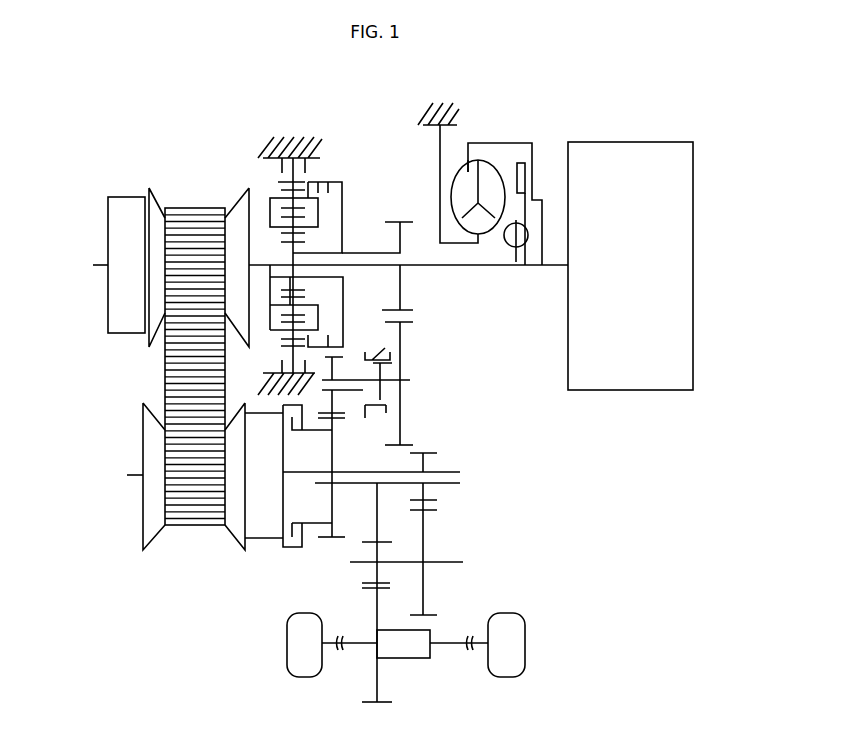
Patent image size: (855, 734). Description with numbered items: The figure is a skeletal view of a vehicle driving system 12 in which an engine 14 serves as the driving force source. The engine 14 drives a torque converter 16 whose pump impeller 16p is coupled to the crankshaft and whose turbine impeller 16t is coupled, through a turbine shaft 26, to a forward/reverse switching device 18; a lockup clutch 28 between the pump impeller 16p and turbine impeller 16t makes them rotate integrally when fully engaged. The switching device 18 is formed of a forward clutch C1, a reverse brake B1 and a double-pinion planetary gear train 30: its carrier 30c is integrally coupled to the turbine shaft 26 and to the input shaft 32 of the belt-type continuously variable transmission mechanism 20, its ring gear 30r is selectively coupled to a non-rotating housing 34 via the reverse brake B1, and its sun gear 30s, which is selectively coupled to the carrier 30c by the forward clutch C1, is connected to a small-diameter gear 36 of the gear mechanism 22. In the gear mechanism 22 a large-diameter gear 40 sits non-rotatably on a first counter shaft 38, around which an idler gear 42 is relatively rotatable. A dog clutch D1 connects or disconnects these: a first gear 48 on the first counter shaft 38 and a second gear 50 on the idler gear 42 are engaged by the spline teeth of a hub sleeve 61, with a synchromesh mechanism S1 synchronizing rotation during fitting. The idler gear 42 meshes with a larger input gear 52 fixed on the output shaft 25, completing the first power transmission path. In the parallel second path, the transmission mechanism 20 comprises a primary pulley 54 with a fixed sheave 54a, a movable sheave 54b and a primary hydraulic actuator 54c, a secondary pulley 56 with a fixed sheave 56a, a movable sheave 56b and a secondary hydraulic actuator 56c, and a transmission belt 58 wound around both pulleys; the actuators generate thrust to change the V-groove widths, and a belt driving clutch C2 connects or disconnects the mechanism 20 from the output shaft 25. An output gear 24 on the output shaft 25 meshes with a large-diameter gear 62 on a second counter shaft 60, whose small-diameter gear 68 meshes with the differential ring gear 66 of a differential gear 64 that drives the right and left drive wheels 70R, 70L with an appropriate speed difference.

The vehicle driving system 12 is at (501, 80).
The engine 14 is at (612, 153).
The torque converter 16 is at (503, 211).
The pump impeller 16p is at (459, 174).
The turbine impeller 16t is at (492, 176).
The forward/reverse switching device 18 is at (341, 157).
The belt-type continuously variable transmission mechanism 20 is at (185, 169).
The gear mechanism 22 is at (431, 313).
The output gear 24 is at (430, 453).
The output shaft 25 is at (377, 486).
The turbine shaft 26 is at (413, 263).
The lockup clutch 28 is at (524, 176).
The planetary gear train 30 is at (301, 254).
The carrier 30c is at (331, 231).
The ring gear 30r is at (274, 245).
The sun gear 30s is at (298, 284).
The input shaft 32 is at (257, 261).
The housing 34 is at (293, 141).
The small-diameter gear 36 is at (405, 218).
The first counter shaft 38 is at (412, 381).
The large-diameter gear 40 is at (396, 448).
The idler gear 42 is at (327, 388).
The first gear 48 is at (388, 409).
The second gear 50 is at (362, 370).
The input gear 52 is at (321, 540).
The primary pulley 54 is at (153, 254).
The fixed sheave 54a is at (233, 210).
The movable sheave 54b is at (162, 210).
The primary hydraulic actuator 54c is at (122, 206).
The secondary pulley 56 is at (182, 490).
The fixed sheave 56a is at (150, 443).
The movable sheave 56b is at (232, 525).
The secondary hydraulic actuator 56c is at (257, 535).
The transmission belt 58 is at (183, 397).
The second counter shaft 60 is at (440, 562).
The hub sleeve 61 is at (374, 352).
The large-diameter gear 62 is at (432, 621).
The differential gear 64 is at (418, 669).
The differential ring gear 66 is at (383, 703).
The small-diameter gear 68 is at (368, 541).
The left drive wheel 70L is at (300, 617).
The right drive wheel 70R is at (503, 618).
The reverse brake B1 is at (284, 182).
The forward clutch C1 is at (317, 206).
The belt driving clutch C2 is at (307, 488).
The dog clutch D1 is at (372, 343).
The synchromesh mechanism S1 is at (361, 399).